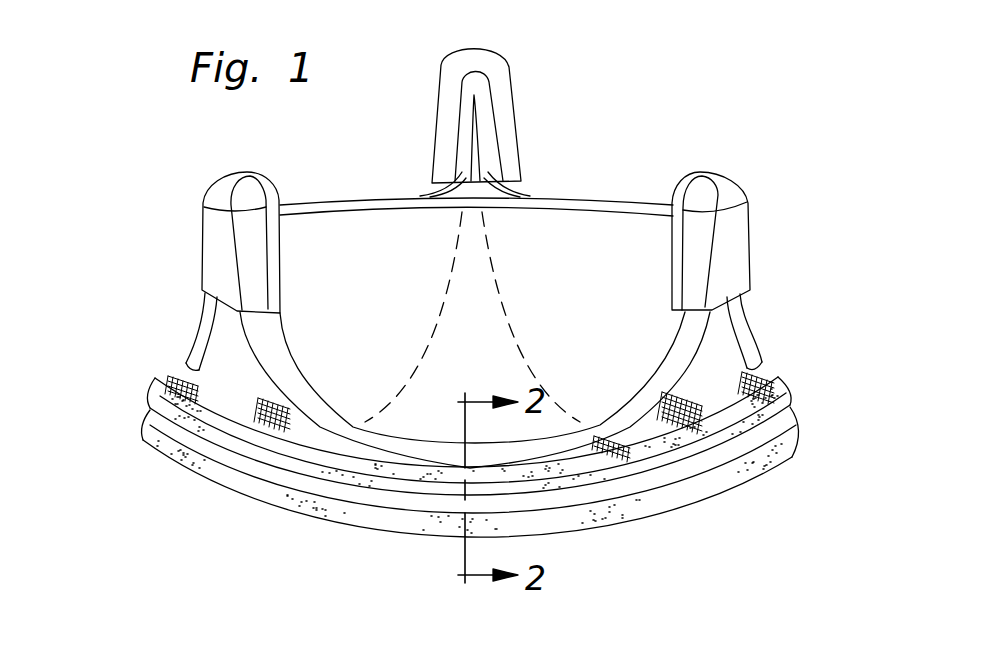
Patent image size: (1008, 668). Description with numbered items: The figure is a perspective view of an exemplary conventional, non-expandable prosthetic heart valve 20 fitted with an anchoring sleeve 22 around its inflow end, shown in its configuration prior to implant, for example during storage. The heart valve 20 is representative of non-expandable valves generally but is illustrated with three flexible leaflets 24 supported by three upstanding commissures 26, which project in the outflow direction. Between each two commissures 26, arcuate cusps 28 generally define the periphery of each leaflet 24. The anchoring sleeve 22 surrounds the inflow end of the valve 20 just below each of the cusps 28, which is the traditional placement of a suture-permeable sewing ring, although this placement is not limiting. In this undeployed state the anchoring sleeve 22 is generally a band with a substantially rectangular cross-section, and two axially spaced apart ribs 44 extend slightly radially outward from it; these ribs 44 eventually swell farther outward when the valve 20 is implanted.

The heart valve 20 is at (783, 248).
The anchoring sleeve 22 is at (785, 455).
The leaflets 24 is at (584, 241).
The commissures 26 is at (497, 62).
The cusps 28 is at (372, 437).
The ribs 44 is at (152, 397).